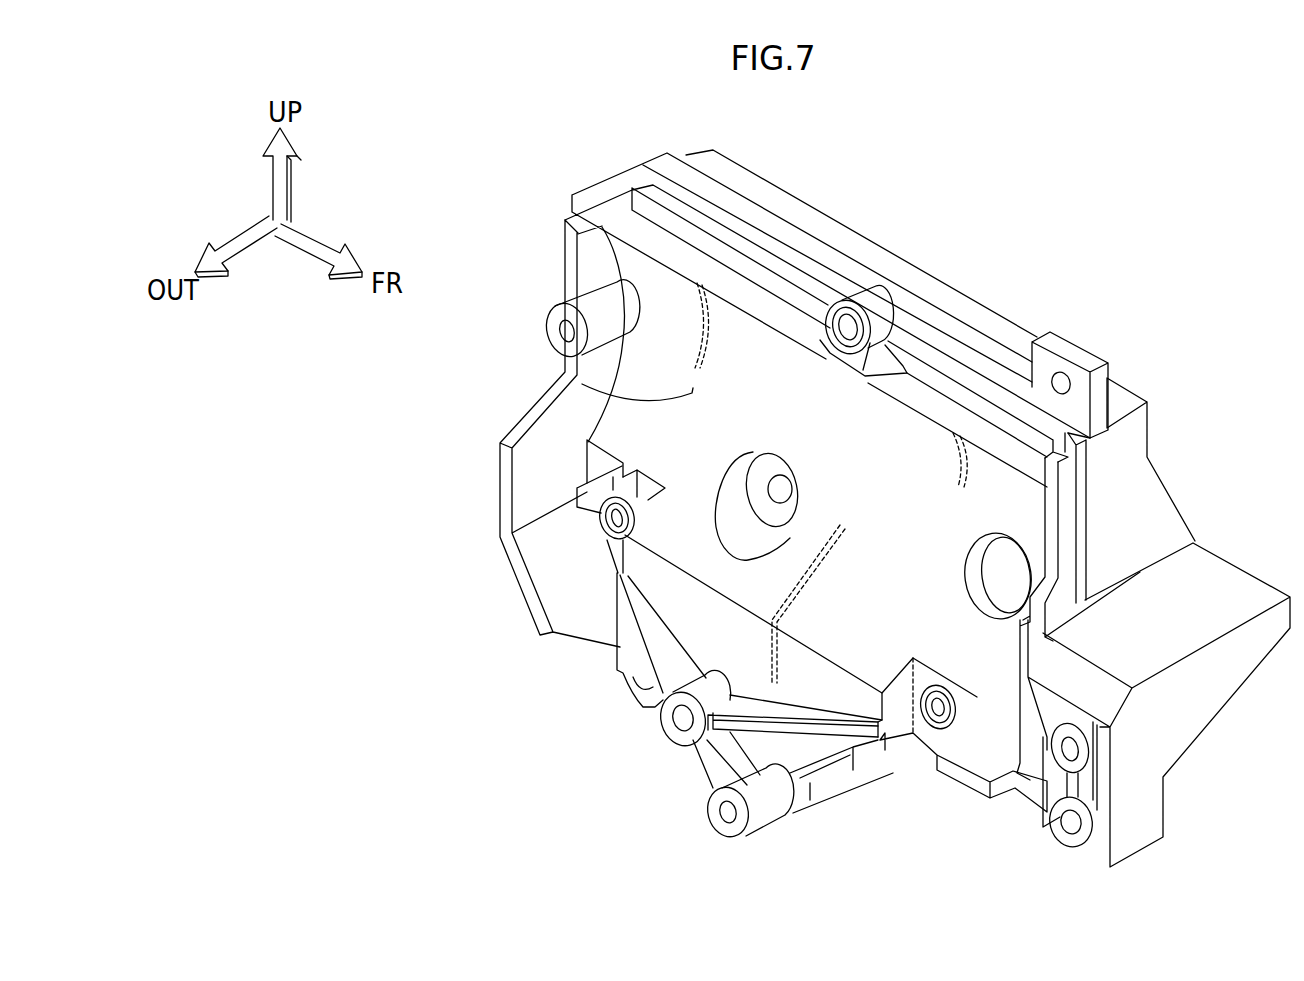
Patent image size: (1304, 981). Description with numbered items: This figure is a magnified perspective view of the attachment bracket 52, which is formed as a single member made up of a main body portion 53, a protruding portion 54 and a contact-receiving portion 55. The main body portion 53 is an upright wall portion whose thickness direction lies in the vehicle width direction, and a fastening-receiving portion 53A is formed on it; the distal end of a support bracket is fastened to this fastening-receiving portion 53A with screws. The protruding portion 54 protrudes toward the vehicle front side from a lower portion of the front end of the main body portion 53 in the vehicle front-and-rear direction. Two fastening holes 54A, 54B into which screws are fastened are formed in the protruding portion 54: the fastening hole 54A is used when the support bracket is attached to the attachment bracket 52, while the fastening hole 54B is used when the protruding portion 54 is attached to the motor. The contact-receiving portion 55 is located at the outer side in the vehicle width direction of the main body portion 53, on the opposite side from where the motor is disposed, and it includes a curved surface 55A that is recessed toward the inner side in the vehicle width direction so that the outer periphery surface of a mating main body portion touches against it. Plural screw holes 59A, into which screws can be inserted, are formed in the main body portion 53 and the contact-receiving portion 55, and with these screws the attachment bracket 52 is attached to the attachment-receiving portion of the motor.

The attachment bracket 52 is at (1000, 293).
The main body portion 53 is at (1163, 480).
The fastening-receiving portion 53A is at (1075, 353).
The protruding portion 54 is at (1222, 592).
The fastening hole 54A is at (1080, 757).
The fastening hole 54B is at (1077, 830).
The contact-receiving portion 55 is at (643, 427).
The curved surface 55A is at (583, 376).
The screw holes 59A is at (822, 307).